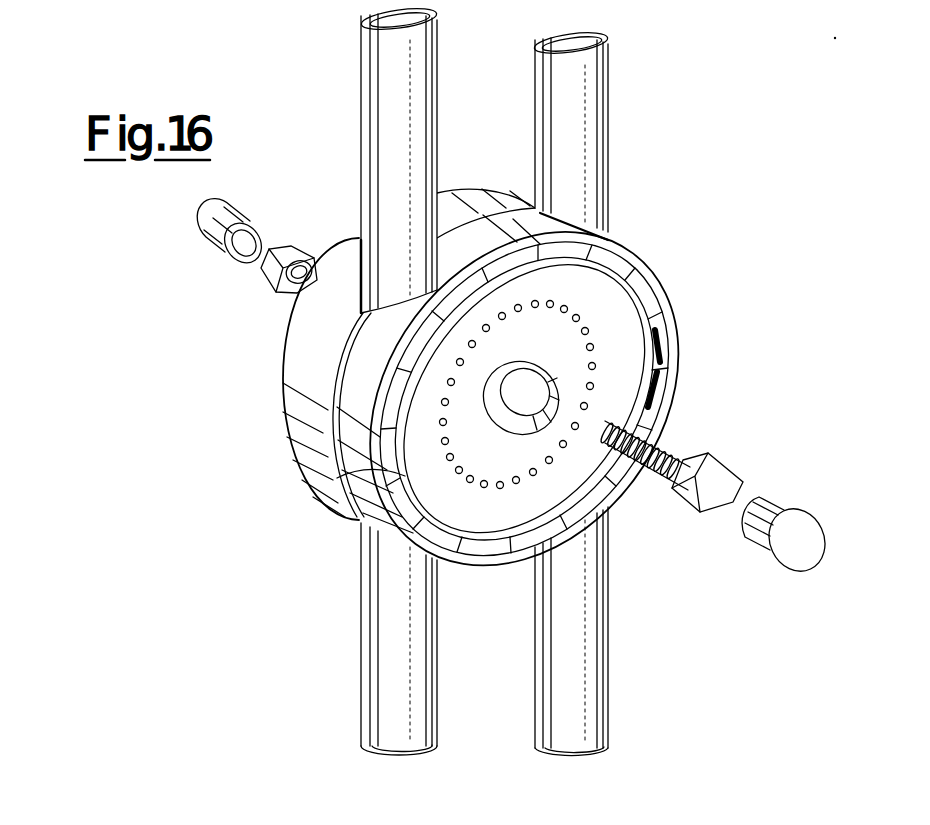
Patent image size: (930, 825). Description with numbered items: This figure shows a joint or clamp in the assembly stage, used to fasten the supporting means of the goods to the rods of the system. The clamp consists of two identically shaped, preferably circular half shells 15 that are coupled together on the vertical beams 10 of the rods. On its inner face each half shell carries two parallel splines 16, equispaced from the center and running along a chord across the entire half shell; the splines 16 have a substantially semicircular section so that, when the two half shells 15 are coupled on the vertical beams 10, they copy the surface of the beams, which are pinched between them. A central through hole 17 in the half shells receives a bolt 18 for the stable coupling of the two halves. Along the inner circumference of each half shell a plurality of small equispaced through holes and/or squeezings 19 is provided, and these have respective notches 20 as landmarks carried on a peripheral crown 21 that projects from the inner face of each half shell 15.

The vertical beams 10 is at (375, 98).
The half shells 15 is at (531, 399).
The splines 16 is at (362, 235).
The through hole 17 is at (498, 412).
The bolt 18 is at (273, 272).
The through holes and/or squeezings 19 is at (593, 345).
The notches 20 is at (340, 492).
The peripheral crown 21 is at (573, 523).